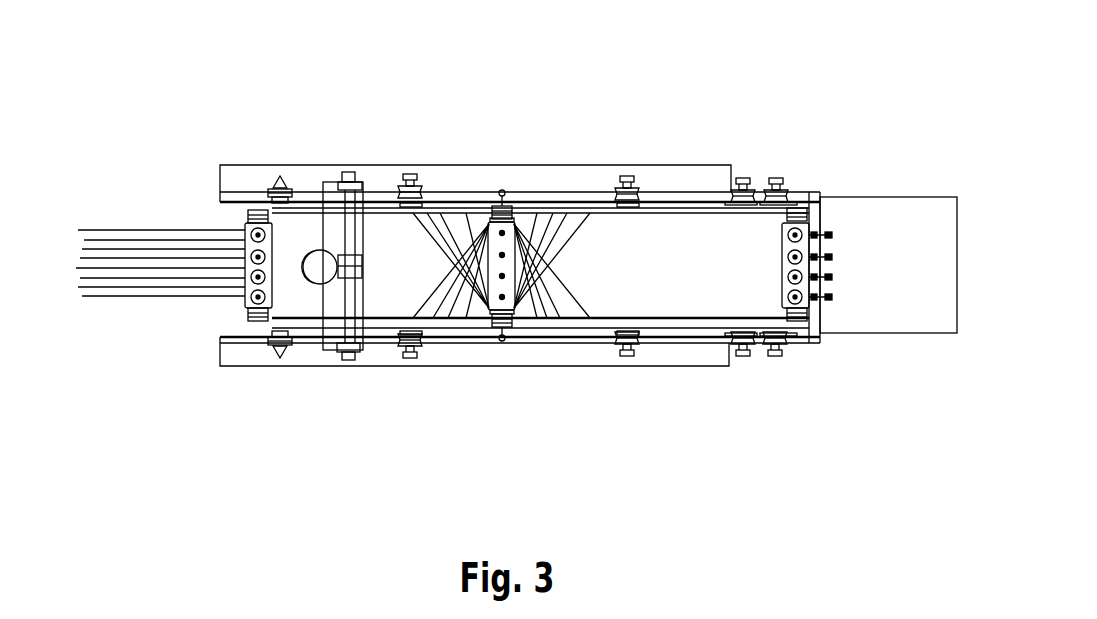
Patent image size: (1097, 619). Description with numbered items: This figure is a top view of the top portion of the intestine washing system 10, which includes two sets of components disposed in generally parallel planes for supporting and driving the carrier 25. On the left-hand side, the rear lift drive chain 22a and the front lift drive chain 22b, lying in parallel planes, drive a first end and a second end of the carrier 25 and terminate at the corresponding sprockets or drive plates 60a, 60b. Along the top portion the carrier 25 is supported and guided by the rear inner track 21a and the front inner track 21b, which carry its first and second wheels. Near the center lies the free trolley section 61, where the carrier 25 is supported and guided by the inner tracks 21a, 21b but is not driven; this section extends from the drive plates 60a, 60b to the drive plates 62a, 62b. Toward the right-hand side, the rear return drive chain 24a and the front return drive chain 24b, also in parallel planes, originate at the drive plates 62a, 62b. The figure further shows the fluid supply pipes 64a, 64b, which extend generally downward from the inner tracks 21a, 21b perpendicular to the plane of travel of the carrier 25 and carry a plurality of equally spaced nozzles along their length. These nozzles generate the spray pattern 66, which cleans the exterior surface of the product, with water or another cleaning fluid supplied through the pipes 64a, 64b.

The intestine washing system 10 is at (667, 43).
The rear inner track 21a is at (643, 217).
The front inner track 21b is at (662, 313).
The rear lift drive chain 22a is at (304, 203).
The front lift drive chain 22b is at (306, 332).
The rear return drive chain 24a is at (701, 202).
The front return drive chain 24b is at (677, 340).
The carrier 25 is at (245, 250).
The drive plate 60a is at (418, 174).
The drive plate 60b is at (403, 358).
The free trolley section 61 is at (612, 373).
The drive plate 62a is at (632, 176).
The drive plate 62b is at (616, 356).
The fluid supply pipe 64a is at (501, 190).
The fluid supply pipe 64b is at (501, 342).
The spray pattern 66 is at (425, 297).